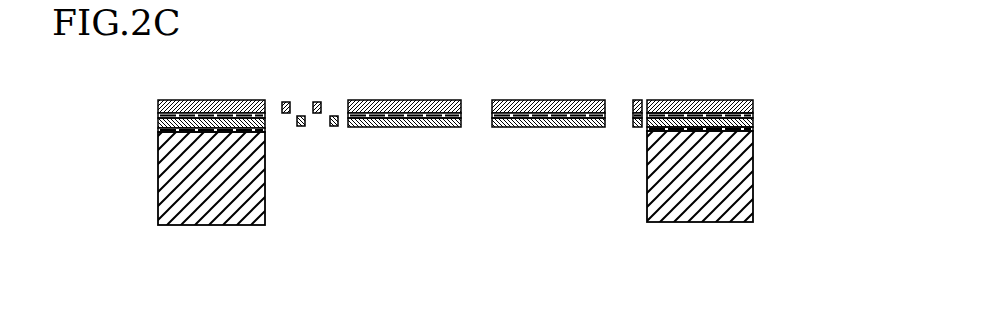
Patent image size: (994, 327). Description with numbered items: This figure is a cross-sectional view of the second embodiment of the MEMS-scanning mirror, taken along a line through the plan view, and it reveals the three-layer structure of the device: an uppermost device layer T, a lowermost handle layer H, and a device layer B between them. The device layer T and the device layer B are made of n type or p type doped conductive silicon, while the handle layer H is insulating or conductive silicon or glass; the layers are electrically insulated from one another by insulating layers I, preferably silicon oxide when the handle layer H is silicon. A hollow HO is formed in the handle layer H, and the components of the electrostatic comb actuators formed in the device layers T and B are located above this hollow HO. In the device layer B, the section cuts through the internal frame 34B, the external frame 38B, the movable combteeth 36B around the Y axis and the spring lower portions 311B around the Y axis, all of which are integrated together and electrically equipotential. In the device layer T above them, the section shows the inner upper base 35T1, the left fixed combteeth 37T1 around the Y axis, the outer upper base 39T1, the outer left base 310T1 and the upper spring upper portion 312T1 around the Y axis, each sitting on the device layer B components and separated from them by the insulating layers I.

The outer left base 310T1 is at (201, 104).
The left fixed combteeth around the Y axis 37T1 is at (317, 101).
The inner upper base 35T1 is at (518, 99).
The upper spring upper portion around the Y axis 312T1 is at (637, 99).
The spring lower portions around the Y axis 311B is at (633, 119).
The outer upper base 39T1 is at (683, 99).
The device layer T is at (735, 100).
The device layer B is at (750, 112).
The insulating layers I is at (230, 131).
The handle layer H is at (180, 208).
The external frame 38B is at (255, 132).
The movable combteeth around the Y axis 36B is at (302, 127).
The internal frame 34B is at (522, 128).
The hollow HO is at (465, 199).